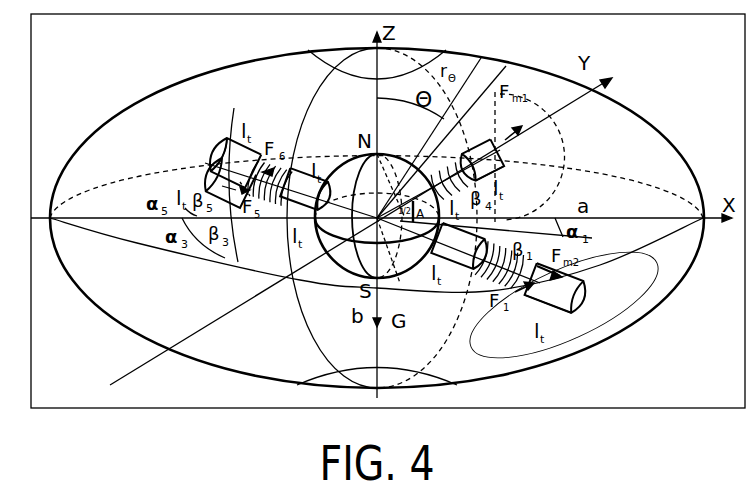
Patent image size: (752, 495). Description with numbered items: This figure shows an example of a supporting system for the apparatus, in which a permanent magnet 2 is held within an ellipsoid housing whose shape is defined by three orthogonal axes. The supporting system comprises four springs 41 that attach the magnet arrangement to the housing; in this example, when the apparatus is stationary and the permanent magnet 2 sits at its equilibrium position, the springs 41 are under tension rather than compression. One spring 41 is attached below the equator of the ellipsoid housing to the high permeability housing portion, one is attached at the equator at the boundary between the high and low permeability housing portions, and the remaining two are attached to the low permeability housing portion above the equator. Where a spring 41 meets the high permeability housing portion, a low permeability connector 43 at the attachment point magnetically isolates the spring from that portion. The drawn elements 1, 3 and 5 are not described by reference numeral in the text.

The first permanent magnet 1 is at (559, 288).
The second permanent magnet 2 is at (486, 159).
The third permanent magnet 3 is at (225, 161).
The fifth permanent magnet 5 is at (204, 172).
The magnet end face 41 is at (197, 162).
The toroidal path 43 is at (545, 146).